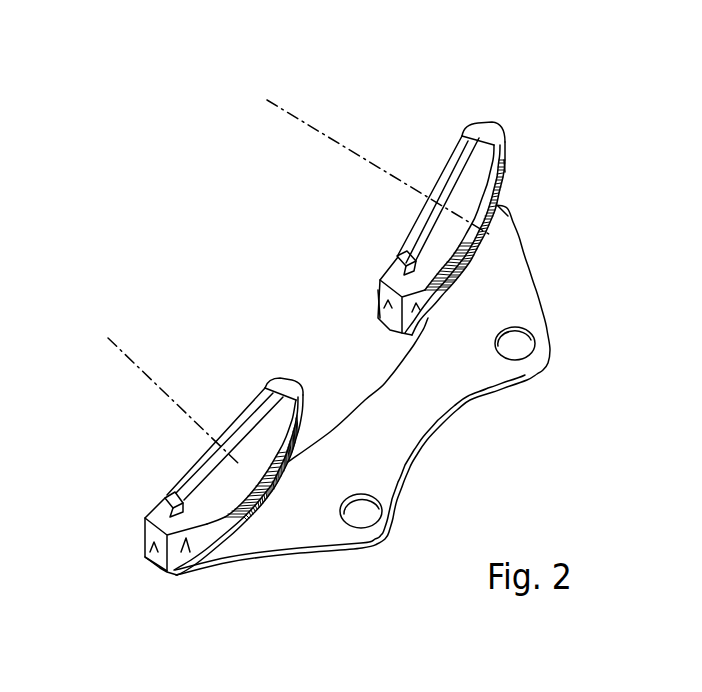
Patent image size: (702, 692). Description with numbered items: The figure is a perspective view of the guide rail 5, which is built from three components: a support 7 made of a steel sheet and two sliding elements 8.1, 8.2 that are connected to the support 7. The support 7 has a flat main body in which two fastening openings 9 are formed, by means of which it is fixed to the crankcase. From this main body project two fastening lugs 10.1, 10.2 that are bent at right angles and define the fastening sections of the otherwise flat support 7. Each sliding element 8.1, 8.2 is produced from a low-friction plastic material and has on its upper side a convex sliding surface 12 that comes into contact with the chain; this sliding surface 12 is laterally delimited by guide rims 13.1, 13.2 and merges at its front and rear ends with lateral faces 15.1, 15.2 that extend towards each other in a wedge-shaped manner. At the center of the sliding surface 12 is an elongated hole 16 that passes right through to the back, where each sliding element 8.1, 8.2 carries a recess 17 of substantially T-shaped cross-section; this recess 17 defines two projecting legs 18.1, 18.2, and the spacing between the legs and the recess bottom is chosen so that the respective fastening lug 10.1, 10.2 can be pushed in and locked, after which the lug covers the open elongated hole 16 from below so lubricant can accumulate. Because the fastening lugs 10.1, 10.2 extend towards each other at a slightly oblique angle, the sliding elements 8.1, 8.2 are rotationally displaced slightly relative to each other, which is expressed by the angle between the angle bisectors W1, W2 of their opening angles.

The guide rail 5 is at (479, 481).
The support 7 is at (430, 407).
The sliding element 8.1 is at (488, 121).
The sliding element 8.2 is at (306, 379).
The fastening opening 9 is at (518, 347).
The fastening lug 10.1 is at (450, 178).
The fastening lug 10.2 is at (250, 432).
The sliding surface 12 is at (388, 328).
The guide rim 13.1 is at (503, 167).
The guide rim 13.2 is at (503, 212).
The lateral face 15.1 is at (498, 128).
The lateral face 15.2 is at (379, 297).
The elongated hole 16 is at (458, 266).
The recess 17 is at (422, 224).
The projecting leg 18.1 is at (462, 137).
The projecting leg 18.2 is at (397, 256).
The angle bisector W1 is at (301, 122).
The angle bisector W2 is at (118, 351).